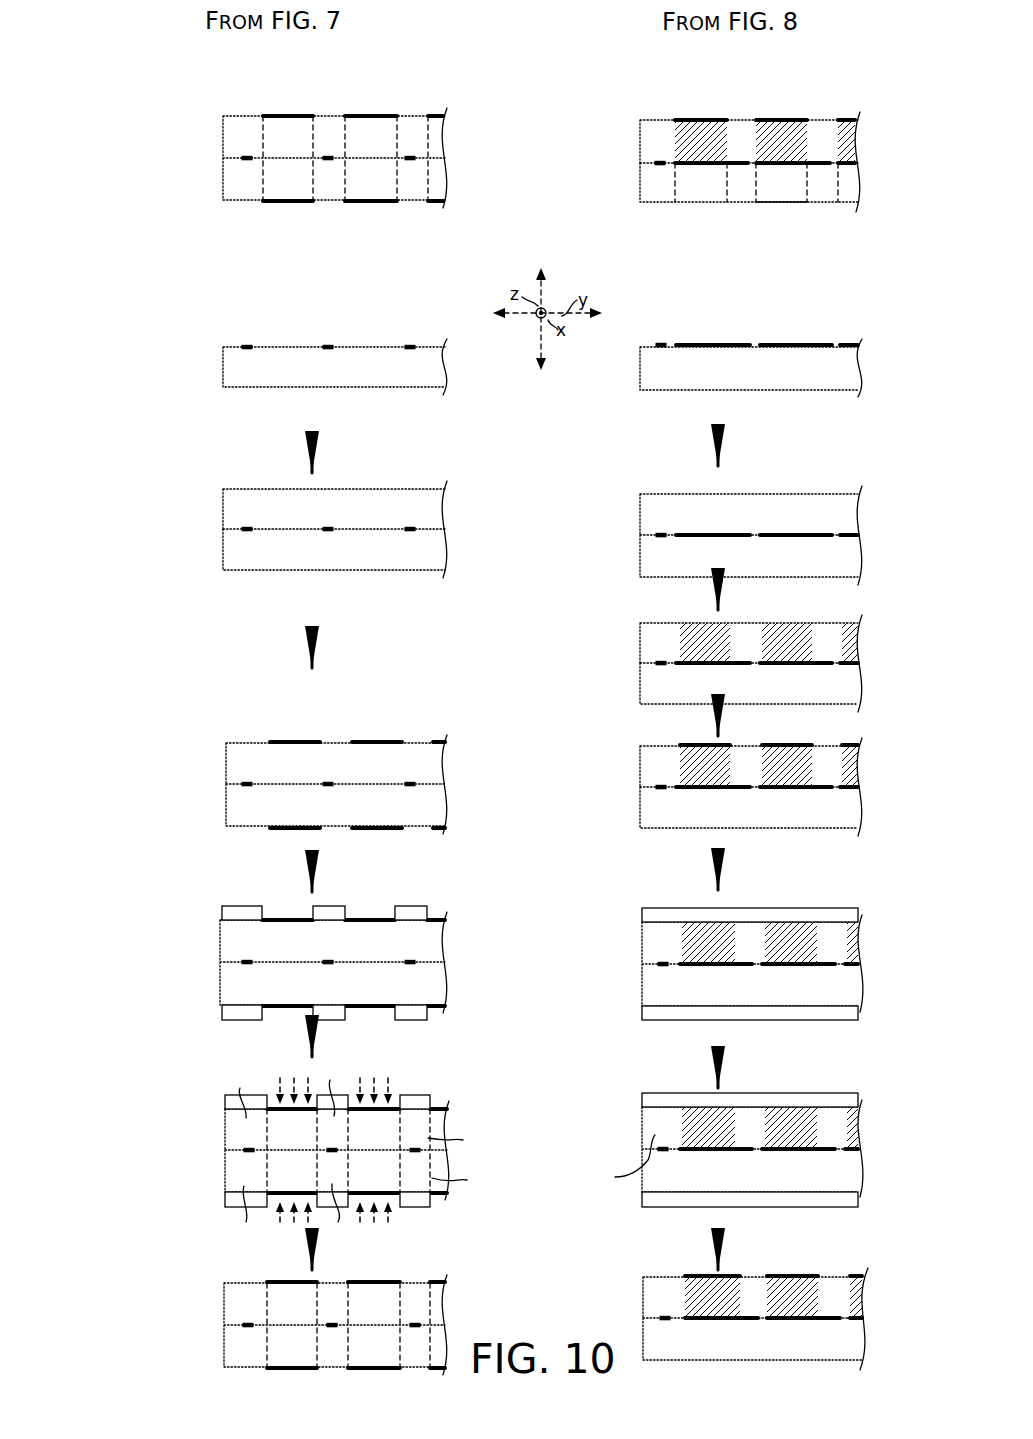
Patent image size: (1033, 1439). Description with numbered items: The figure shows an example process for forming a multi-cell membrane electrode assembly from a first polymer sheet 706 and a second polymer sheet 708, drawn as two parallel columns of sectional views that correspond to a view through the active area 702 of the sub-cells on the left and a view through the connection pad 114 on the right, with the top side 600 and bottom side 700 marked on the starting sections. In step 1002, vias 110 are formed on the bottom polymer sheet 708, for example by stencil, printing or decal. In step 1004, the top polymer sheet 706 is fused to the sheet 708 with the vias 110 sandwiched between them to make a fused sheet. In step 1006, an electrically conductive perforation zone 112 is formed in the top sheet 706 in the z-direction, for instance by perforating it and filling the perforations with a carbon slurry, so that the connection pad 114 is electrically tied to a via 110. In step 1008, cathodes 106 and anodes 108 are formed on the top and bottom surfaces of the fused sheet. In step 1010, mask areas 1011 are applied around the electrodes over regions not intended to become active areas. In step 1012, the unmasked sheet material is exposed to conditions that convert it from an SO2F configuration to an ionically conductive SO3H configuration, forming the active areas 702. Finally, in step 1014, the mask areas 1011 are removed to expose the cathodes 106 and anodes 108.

The cathode 106 is at (301, 116).
The anode 108 is at (306, 204).
The via 110 is at (248, 156).
The perforation zone 112 is at (695, 630).
The connection pad 114 is at (688, 120).
The top side 600 is at (436, 106).
The bottom side 700 is at (276, 214).
The active area 702 is at (287, 140).
The first polymer sheet 706 is at (880, 1300).
The second polymer sheet 708 is at (880, 1343).
The step 1002 is at (382, 414).
The step 1004 is at (382, 592).
The step 1006 is at (382, 693).
The step 1008 is at (382, 834).
The step 1010 is at (382, 1019).
The mask areas 1011 is at (258, 906).
The step 1012 is at (382, 1164).
The step 1014 is at (235, 1325).